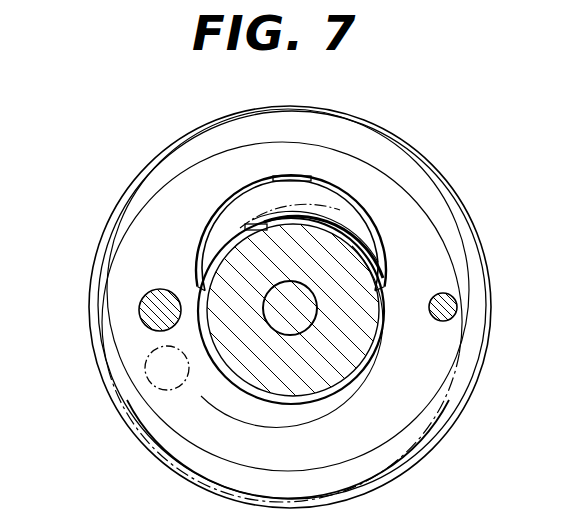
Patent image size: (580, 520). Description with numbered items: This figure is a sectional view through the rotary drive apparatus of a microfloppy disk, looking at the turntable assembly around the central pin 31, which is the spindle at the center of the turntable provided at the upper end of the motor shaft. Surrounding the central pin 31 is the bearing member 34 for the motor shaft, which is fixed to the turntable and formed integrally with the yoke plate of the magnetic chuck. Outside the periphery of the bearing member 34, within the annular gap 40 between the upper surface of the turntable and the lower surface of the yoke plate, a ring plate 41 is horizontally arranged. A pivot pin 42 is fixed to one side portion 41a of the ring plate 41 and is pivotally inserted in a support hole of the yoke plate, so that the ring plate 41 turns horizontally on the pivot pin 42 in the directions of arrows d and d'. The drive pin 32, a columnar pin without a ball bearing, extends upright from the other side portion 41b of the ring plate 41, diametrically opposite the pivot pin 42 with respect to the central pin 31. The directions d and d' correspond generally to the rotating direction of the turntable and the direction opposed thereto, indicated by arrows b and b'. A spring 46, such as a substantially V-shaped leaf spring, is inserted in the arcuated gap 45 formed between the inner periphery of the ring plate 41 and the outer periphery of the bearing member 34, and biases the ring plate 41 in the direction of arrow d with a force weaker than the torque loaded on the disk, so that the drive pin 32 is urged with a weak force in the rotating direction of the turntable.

The central pin 31 is at (300, 336).
The drive pin 32 is at (150, 354).
The bearing member 34 is at (347, 365).
The annular gap 40 is at (199, 305).
The ring plate 41 is at (213, 170).
The one side portion of the ring plate 41a is at (463, 276).
The other side portion of the ring plate 41b is at (118, 256).
The pivot pin 42 is at (455, 311).
The arcuated gap 45 is at (313, 192).
The spring 46 is at (355, 205).
The arrow b is at (90, 184).
The arrow b' is at (70, 399).
The arrow d is at (146, 271).
The arrow d' is at (185, 386).